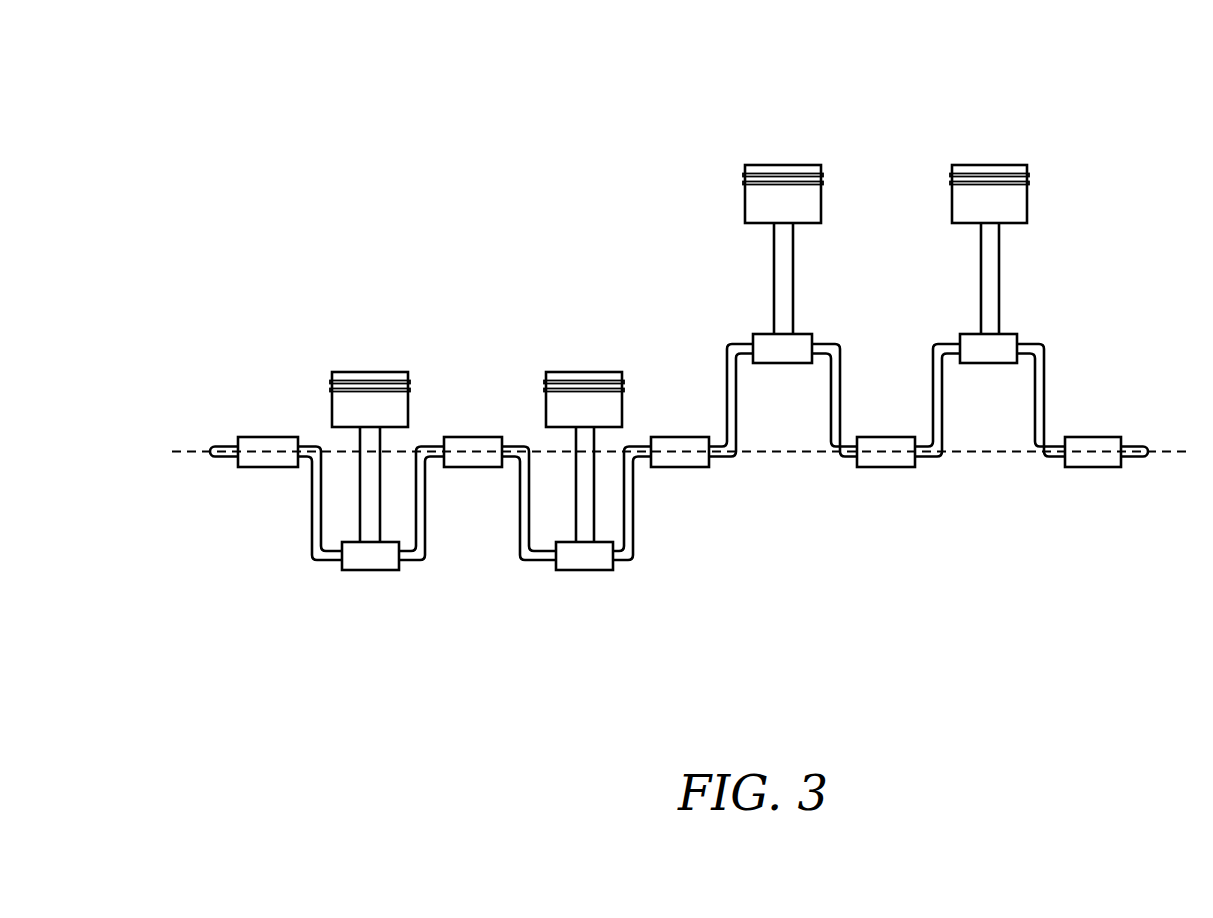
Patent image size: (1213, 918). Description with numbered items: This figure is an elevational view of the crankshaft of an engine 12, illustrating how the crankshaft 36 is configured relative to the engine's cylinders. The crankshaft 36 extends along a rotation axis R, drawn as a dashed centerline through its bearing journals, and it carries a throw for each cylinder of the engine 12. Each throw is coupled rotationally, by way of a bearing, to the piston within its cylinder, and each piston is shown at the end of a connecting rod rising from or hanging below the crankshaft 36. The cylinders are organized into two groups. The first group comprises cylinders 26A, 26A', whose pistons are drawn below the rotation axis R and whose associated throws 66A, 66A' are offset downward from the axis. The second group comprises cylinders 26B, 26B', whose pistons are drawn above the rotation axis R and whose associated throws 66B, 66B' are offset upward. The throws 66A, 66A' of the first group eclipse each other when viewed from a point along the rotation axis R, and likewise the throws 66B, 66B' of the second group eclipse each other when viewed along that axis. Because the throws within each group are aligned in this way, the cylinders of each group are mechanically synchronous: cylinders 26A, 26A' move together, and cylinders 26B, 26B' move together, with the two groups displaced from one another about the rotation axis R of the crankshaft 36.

The engine 12 is at (220, 212).
The cylinder 26A is at (370, 398).
The cylinder 26A' is at (584, 399).
The cylinder 26B is at (783, 188).
The cylinder 26B' is at (989, 188).
The crankshaft 36 is at (1150, 360).
The throw 66A is at (387, 534).
The throw 66A' is at (594, 534).
The throw 66B is at (767, 370).
The throw 66B' is at (974, 370).
The rotation axis R is at (671, 453).